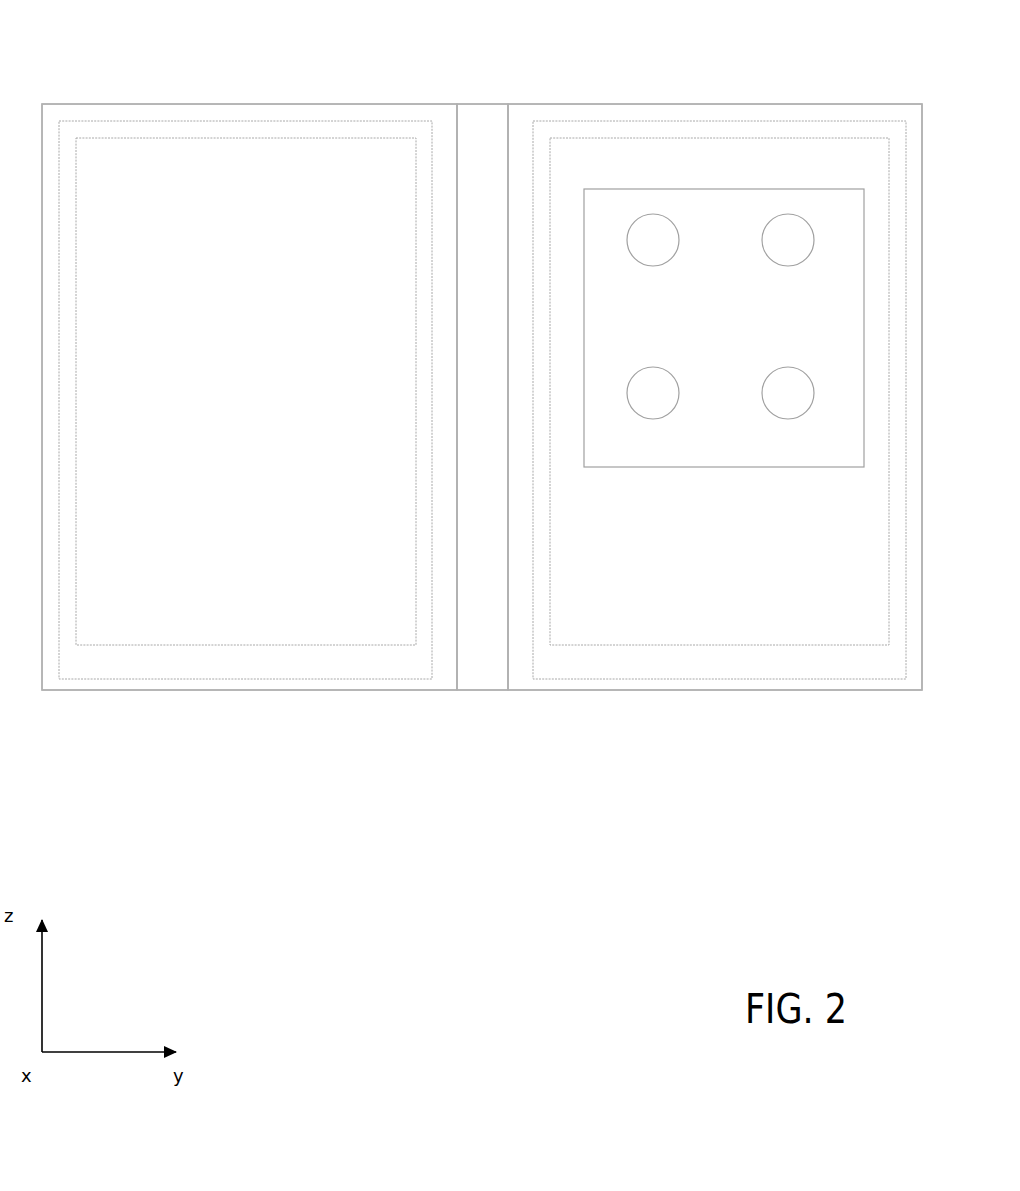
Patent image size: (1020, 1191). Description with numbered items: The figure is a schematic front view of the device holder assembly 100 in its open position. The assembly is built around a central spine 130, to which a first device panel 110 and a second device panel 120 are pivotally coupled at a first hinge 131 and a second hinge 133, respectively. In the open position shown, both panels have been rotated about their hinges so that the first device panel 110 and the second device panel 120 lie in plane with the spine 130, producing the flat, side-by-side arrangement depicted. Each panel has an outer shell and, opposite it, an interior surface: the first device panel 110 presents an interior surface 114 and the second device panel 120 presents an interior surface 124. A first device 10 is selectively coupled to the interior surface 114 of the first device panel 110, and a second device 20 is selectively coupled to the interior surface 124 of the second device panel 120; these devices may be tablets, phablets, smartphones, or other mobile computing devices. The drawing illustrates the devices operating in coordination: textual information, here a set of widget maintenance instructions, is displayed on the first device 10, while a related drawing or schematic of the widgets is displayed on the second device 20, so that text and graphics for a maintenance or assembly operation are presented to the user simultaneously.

The first device 10 is at (119, 163).
The second device 20 is at (592, 155).
The device holder assembly 100 is at (290, 713).
The first device panel 110 is at (110, 690).
The interior surface 114 is at (143, 663).
The second device panel 120 is at (586, 691).
The interior surface 124 is at (716, 667).
The spine 130 is at (492, 140).
The first hinge 131 is at (458, 103).
The second hinge 133 is at (508, 102).